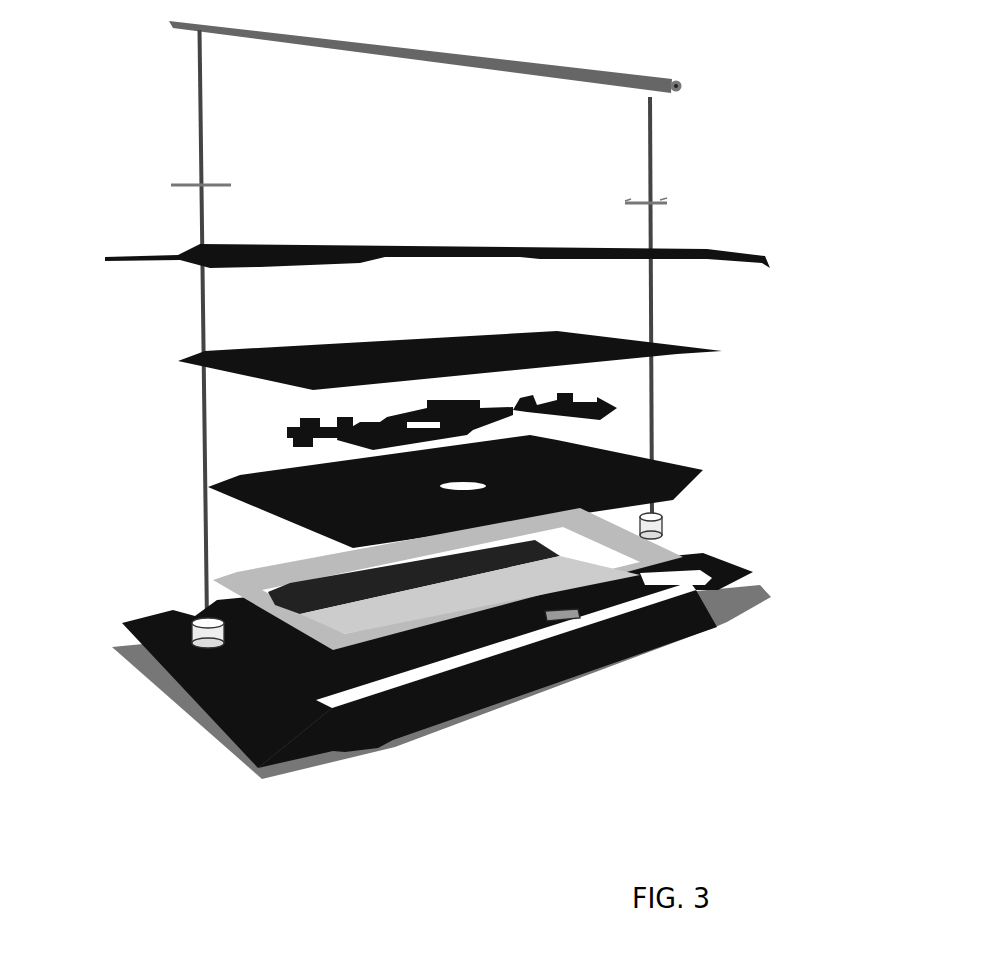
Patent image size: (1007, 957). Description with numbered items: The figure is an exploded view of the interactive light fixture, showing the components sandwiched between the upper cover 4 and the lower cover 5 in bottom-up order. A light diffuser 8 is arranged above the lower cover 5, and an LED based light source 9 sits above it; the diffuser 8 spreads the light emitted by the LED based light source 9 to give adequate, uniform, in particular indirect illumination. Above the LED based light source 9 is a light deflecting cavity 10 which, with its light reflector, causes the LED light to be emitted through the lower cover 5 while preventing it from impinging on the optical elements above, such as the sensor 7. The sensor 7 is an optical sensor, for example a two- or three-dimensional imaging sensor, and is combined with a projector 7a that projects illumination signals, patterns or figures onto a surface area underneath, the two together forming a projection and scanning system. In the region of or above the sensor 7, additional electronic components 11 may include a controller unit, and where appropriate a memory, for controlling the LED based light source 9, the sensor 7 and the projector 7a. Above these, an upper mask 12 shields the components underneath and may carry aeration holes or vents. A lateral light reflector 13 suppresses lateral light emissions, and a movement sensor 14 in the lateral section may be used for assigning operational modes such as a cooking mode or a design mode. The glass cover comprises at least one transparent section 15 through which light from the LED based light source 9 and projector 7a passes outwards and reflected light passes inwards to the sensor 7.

The upper cover 4 is at (142, 258).
The lower cover 5 is at (240, 758).
The sensor 7 is at (487, 460).
The projector 7a is at (465, 457).
The light diffuser 8 is at (675, 557).
The LED based light source 9 is at (660, 527).
The light deflecting cavity 10 is at (300, 517).
The electronic components 11 is at (603, 405).
The upper mask 12 is at (687, 342).
The lateral light reflector 13 is at (672, 602).
The movement sensor 14 is at (563, 613).
The transparent section 15 is at (472, 700).